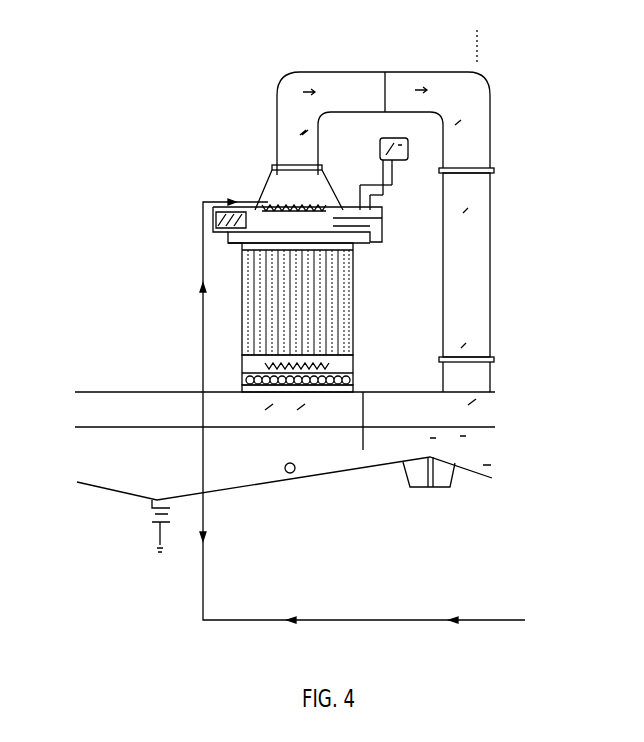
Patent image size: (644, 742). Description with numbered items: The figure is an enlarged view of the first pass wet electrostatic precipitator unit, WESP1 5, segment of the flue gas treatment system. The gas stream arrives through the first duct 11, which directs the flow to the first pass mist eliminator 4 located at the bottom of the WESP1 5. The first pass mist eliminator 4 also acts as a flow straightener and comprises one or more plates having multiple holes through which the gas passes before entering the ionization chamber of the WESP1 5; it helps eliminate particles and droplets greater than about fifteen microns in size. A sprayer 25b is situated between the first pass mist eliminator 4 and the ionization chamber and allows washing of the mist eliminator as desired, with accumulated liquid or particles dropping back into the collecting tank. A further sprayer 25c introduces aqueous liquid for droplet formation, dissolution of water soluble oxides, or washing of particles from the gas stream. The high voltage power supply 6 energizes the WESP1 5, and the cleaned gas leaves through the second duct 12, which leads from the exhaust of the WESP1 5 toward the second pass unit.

The second duct 12 is at (308, 103).
The high voltage power supply 6 is at (408, 138).
The sprayer 25c is at (285, 210).
The first pass wet electrostatic precipitator unit (WESP1) 5 is at (233, 312).
The sprayer 25b is at (245, 368).
The first pass mist eliminator 4 is at (348, 382).
The first duct 11 is at (130, 405).